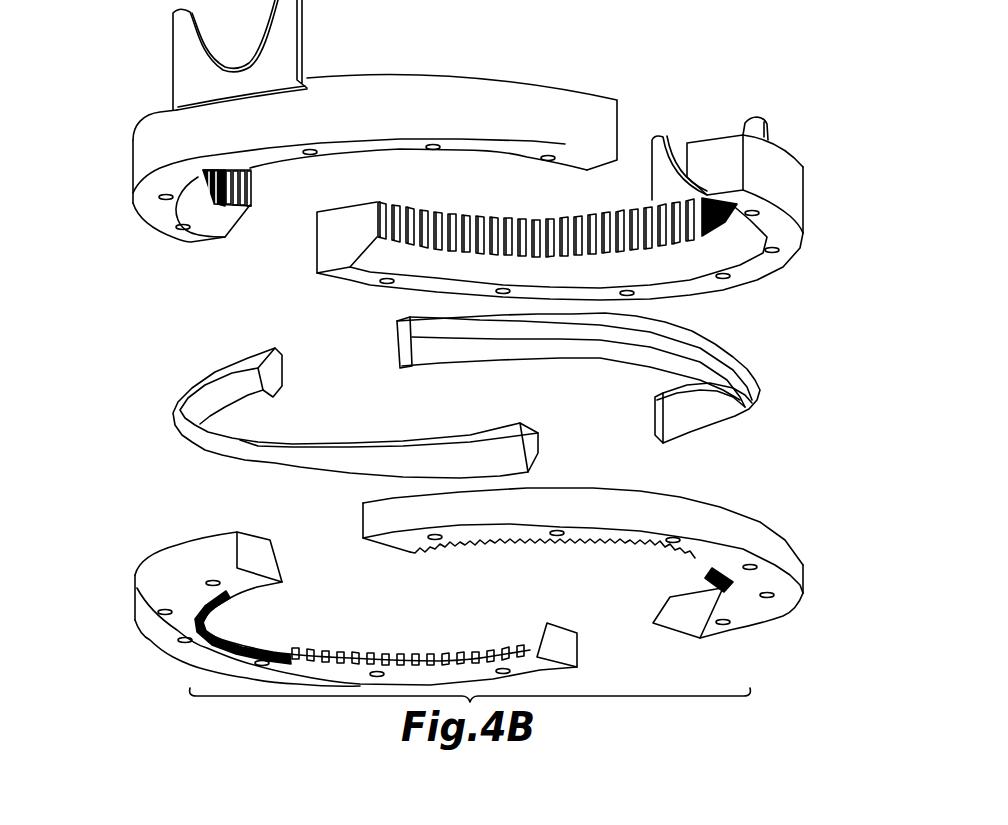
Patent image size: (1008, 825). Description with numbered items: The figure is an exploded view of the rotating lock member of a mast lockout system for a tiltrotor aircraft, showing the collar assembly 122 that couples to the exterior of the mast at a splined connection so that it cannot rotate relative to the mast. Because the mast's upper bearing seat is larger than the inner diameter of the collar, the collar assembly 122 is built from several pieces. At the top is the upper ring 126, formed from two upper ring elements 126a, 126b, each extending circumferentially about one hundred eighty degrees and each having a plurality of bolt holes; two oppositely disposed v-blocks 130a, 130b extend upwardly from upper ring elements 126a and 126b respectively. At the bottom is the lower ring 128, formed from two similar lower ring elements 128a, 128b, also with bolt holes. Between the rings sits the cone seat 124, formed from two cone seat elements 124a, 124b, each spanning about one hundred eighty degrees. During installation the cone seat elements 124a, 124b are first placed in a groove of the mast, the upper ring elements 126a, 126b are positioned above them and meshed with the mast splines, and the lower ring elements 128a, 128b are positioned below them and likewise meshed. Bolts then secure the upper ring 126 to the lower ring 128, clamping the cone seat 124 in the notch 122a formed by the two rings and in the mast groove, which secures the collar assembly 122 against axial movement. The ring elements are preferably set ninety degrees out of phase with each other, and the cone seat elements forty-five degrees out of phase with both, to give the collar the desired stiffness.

The collar assembly 122 is at (795, 110).
The notch 122a is at (220, 217).
The cone seat 124 is at (759, 366).
The cone seat element 124a is at (187, 417).
The cone seat element 124b is at (747, 390).
The upper ring 126 is at (803, 171).
The upper ring element 126a is at (147, 157).
The upper ring element 126b is at (792, 192).
The lower ring 128 is at (794, 531).
The lower ring element 128a is at (143, 587).
The lower ring element 128b is at (797, 555).
The v-block 130a is at (183, 55).
The v-block 130b is at (653, 158).